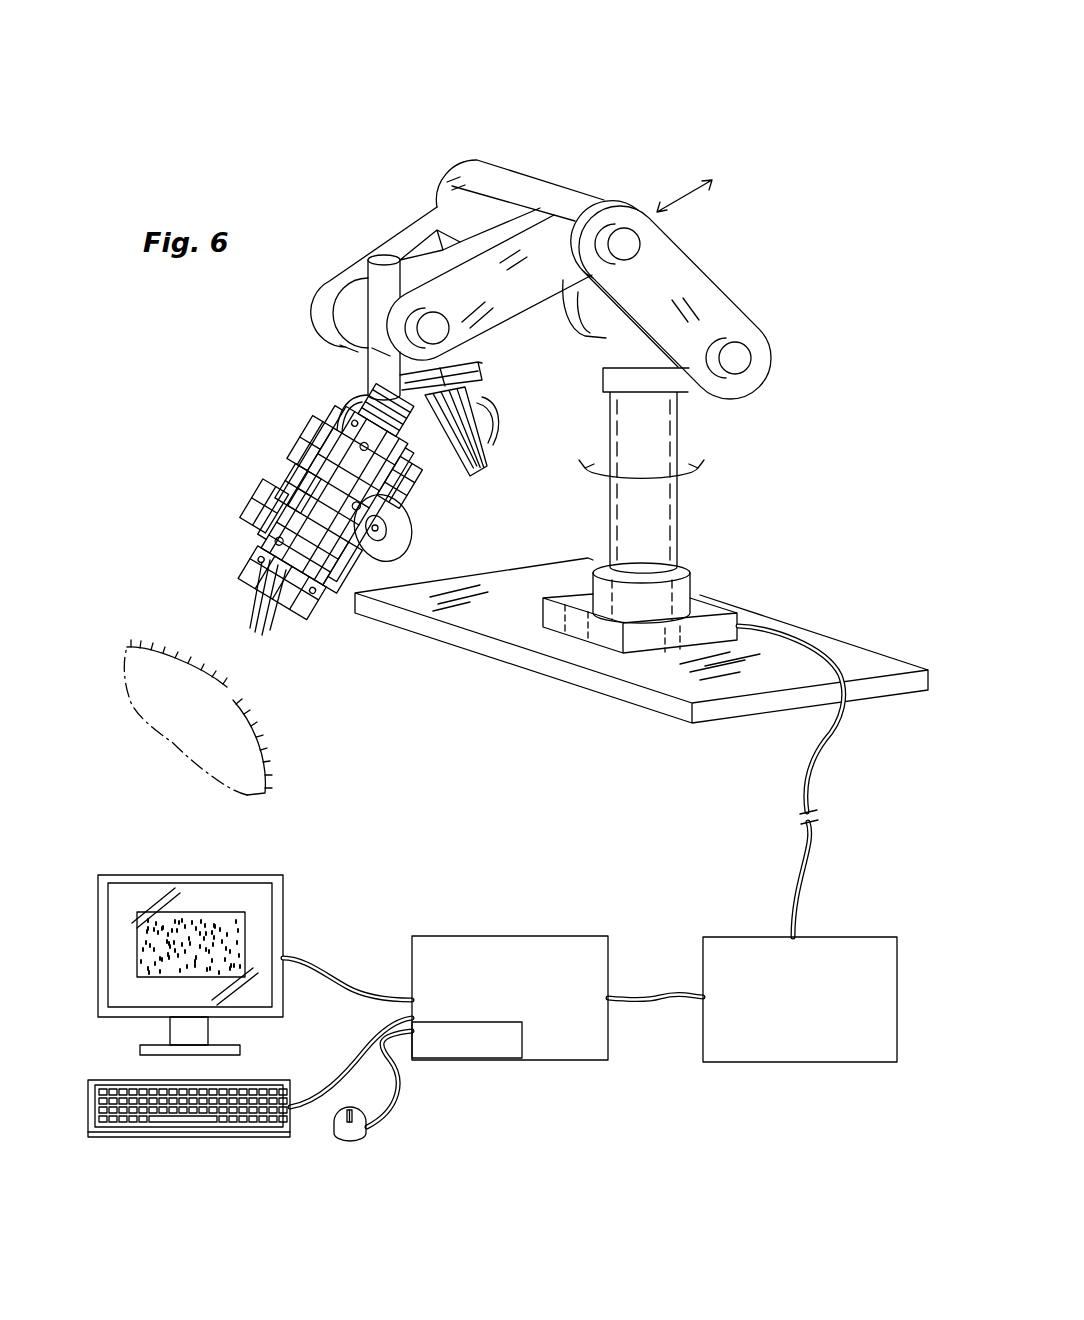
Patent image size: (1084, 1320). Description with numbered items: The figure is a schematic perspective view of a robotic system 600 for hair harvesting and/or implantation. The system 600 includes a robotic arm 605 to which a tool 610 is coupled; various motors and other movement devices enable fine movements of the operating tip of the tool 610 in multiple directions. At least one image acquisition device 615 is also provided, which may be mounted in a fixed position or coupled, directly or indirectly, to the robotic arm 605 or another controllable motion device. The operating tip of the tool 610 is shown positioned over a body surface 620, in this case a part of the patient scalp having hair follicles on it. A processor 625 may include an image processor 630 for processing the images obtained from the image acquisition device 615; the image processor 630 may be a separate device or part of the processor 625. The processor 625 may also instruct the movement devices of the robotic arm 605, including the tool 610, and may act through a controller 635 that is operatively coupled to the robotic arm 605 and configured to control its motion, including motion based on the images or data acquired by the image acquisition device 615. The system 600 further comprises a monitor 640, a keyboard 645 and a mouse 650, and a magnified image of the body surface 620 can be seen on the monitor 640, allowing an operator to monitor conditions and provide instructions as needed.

The robotic system 600 is at (630, 133).
The robotic arm 605 is at (705, 270).
The tool 610 is at (247, 635).
The image acquisition device 615 is at (308, 498).
The body surface 620 is at (203, 920).
The processor 625 is at (556, 936).
The image processor 630 is at (467, 1038).
The controller 635 is at (853, 937).
The monitor 640 is at (283, 905).
The keyboard 645 is at (157, 1135).
The mouse 650 is at (355, 1143).